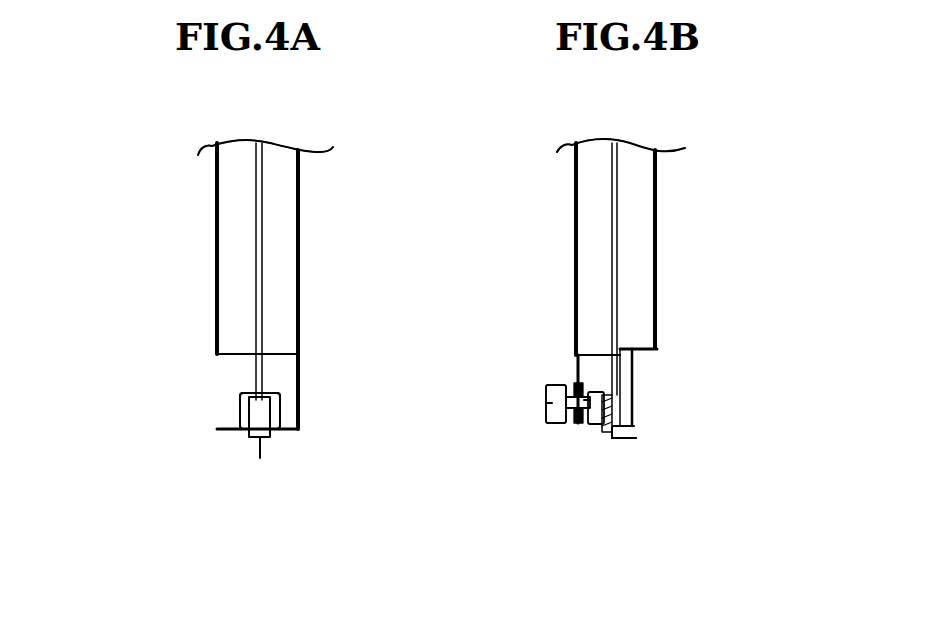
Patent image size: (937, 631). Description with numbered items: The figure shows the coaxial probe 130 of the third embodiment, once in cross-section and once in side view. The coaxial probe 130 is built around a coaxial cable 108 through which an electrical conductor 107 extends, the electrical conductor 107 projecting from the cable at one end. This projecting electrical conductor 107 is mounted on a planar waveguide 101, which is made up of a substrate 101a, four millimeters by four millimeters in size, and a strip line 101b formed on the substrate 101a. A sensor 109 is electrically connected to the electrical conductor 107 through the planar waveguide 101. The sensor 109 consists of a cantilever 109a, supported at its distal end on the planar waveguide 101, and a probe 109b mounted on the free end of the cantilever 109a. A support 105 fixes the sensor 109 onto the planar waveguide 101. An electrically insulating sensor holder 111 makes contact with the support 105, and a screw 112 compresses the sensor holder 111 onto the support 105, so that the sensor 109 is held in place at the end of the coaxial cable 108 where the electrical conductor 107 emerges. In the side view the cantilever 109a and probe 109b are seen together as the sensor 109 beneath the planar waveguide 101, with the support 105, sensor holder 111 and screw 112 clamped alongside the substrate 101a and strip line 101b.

In FIG. 4A, the coaxial probe 130 is at (124, 178).
In FIG. 4B, the coaxial probe 130 is at (774, 189).
In FIG. 4A, the coaxial cable 108 is at (188, 143).
In FIG. 4B, the coaxial cable 108 is at (547, 137).
In FIG. 4A, the electrical conductor 107 is at (262, 245).
In FIG. 4B, the electrical conductor 107 is at (619, 233).
In FIG. 4A, the planar waveguide 101 is at (76, 378).
In FIG. 4B, the planar waveguide 101 is at (437, 350).
In FIG. 4A, the substrate 101a is at (228, 402).
In FIG. 4B, the substrate 101a is at (572, 375).
In FIG. 4A, the strip line 101b is at (256, 372).
In FIG. 4B, the strip line 101b is at (573, 392).
In FIG. 4A, the support 105 is at (240, 428).
In FIG. 4B, the support 105 is at (602, 415).
In FIG. 4A, the sensor 109 is at (258, 452).
In FIG. 4B, the sensor 109 is at (705, 513).
In FIG. 4B, the cantilever 109a is at (611, 428).
In FIG. 4B, the probe 109b is at (616, 438).
In FIG. 4B, the sensor holder 111 is at (588, 408).
In FIG. 4B, the screw 112 is at (548, 408).